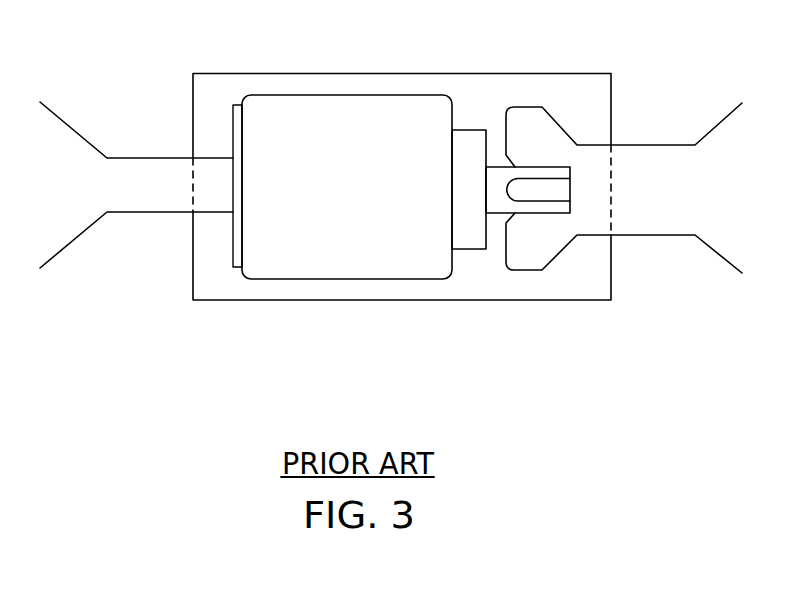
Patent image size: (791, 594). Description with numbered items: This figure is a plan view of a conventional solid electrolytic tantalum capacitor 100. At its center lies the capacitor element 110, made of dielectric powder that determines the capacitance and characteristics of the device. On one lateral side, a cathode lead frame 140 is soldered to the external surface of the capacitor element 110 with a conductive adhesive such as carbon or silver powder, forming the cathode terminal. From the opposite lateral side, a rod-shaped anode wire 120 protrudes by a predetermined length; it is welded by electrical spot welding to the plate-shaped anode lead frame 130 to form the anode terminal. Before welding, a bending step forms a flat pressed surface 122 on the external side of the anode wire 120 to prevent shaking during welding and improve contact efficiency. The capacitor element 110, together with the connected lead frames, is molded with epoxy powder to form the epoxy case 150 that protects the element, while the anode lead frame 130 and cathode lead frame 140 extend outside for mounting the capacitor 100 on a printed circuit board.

The tantalum capacitor 100 is at (108, 313).
The capacitor element 110 is at (382, 117).
The anode wire 120 is at (498, 217).
The flat pressed surface 122 is at (560, 193).
The anode lead frame 130 is at (677, 215).
The cathode lead frame 140 is at (152, 175).
The epoxy case 150 is at (252, 284).